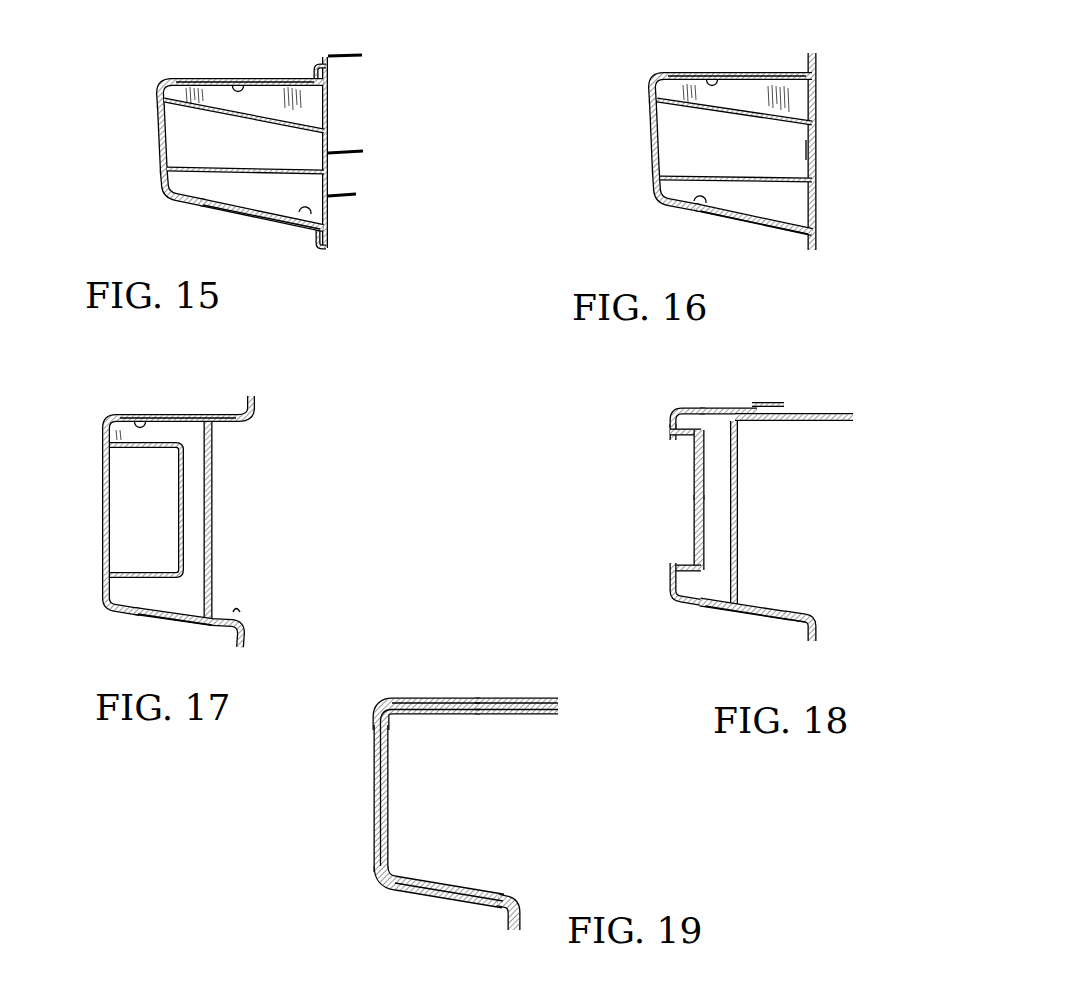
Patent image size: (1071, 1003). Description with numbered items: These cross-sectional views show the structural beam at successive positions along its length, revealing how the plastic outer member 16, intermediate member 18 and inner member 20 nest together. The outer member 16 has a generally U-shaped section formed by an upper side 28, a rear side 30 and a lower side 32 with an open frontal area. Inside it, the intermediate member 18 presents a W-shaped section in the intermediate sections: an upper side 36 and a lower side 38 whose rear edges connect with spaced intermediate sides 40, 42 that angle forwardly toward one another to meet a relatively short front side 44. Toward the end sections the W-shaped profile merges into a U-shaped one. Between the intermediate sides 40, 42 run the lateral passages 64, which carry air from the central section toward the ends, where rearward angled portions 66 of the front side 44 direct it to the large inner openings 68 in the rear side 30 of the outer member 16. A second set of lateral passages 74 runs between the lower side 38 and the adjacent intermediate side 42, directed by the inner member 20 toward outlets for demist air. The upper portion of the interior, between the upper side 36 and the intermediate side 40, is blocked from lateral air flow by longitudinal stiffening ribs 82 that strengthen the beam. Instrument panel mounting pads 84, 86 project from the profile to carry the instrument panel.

In FIG. 15, the outer member 16 is at (165, 76).
In FIG. 16, the outer member 16 is at (660, 66).
In FIG. 17, the outer member 16 is at (114, 408).
In FIG. 18, the outer member 16 is at (683, 400).
In FIG. 19, the outer member 16 is at (563, 692).
In FIG. 15, the intermediate member 18 is at (178, 117).
In FIG. 16, the intermediate member 18 is at (797, 112).
In FIG. 17, the intermediate member 18 is at (118, 453).
In FIG. 18, the intermediate member 18 is at (690, 475).
In FIG. 19, the intermediate member 18 is at (563, 705).
In FIG. 15, the inner member 20 is at (332, 122).
In FIG. 16, the inner member 20 is at (822, 198).
In FIG. 17, the inner member 20 is at (220, 490).
In FIG. 18, the inner member 20 is at (745, 530).
In FIG. 19, the inner member 20 is at (565, 720).
In FIG. 15, the upper side 28 is at (208, 78).
In FIG. 16, the upper side 28 is at (737, 70).
In FIG. 17, the upper side 28 is at (157, 412).
In FIG. 18, the upper side 28 is at (717, 405).
In FIG. 19, the upper side 28 is at (507, 697).
In FIG. 15, the rear side 30 is at (163, 164).
In FIG. 16, the rear side 30 is at (653, 110).
In FIG. 17, the rear side 30 is at (108, 510).
In FIG. 18, the rear side 30 is at (668, 577).
In FIG. 19, the rear side 30 is at (372, 790).
In FIG. 15, the lower side 32 is at (280, 218).
In FIG. 16, the lower side 32 is at (765, 220).
In FIG. 17, the lower side 32 is at (165, 615).
In FIG. 18, the lower side 32 is at (748, 612).
In FIG. 19, the lower side 32 is at (445, 902).
In FIG. 15, the upper side 36 is at (246, 88).
In FIG. 16, the upper side 36 is at (714, 81).
In FIG. 17, the upper side 36 is at (138, 425).
In FIG. 18, the upper side 36 is at (828, 410).
In FIG. 19, the upper side 36 is at (418, 697).
In FIG. 15, the lower side 38 is at (307, 207).
In FIG. 16, the lower side 38 is at (700, 197).
In FIG. 17, the lower side 38 is at (205, 598).
In FIG. 18, the lower side 38 is at (720, 598).
In FIG. 19, the lower side 38 is at (453, 897).
In FIG. 15, the intermediate side 40 is at (242, 120).
In FIG. 16, the intermediate side 40 is at (735, 113).
In FIG. 17, the intermediate side 40 is at (150, 444).
In FIG. 19, the intermediate side 40 is at (520, 697).
In FIG. 15, the intermediate side 42 is at (253, 168).
In FIG. 16, the intermediate side 42 is at (750, 178).
In FIG. 17, the intermediate side 42 is at (145, 578).
In FIG. 15, the front side 44 is at (320, 156).
In FIG. 16, the front side 44 is at (805, 152).
In FIG. 15, the lateral passages 64 is at (170, 152).
In FIG. 16, the lateral passages 64 is at (663, 150).
In FIG. 17, the lateral passages 64 is at (115, 537).
In FIG. 18, the lateral passages 64 is at (690, 562).
In FIG. 17, the rearward angled portions 66 is at (177, 487).
In FIG. 18, the rearward angled portions 66 is at (692, 505).
In FIG. 18, the inner openings 68 is at (676, 442).
In FIG. 15, the lateral passages 74 is at (243, 196).
In FIG. 16, the lateral passages 74 is at (745, 200).
In FIG. 17, the lateral passages 74 is at (120, 592).
In FIG. 18, the lateral passages 74 is at (723, 562).
In FIG. 15, the longitudinal stiffening ribs 82 is at (317, 102).
In FIG. 16, the longitudinal stiffening ribs 82 is at (760, 92).
In FIG. 18, the instrument panel mounting pad 84 is at (782, 398).
In FIG. 15, the instrument panel mounting pad 86 is at (337, 58).